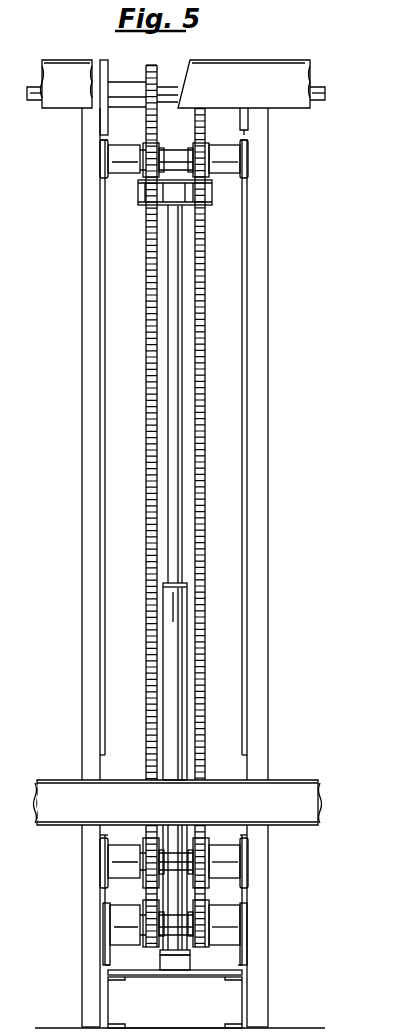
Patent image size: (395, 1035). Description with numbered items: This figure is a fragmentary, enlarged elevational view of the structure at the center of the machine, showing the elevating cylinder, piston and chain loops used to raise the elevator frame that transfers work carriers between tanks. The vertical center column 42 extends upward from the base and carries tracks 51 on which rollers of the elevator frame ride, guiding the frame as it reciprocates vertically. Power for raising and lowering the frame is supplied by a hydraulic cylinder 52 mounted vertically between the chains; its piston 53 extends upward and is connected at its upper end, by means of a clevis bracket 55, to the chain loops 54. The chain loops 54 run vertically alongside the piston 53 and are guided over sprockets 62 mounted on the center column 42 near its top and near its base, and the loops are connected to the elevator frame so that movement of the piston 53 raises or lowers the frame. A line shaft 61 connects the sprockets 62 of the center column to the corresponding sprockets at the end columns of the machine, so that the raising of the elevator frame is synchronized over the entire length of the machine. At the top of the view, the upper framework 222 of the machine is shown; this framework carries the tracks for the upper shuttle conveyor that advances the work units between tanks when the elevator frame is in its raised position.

The vertical center column 42 is at (263, 537).
The tracks 51 is at (244, 470).
The hydraulic cylinder 52 is at (180, 656).
The piston 53 is at (180, 338).
The chain loops 54 is at (203, 275).
The clevis bracket 55 is at (205, 195).
The line shaft 61 is at (163, 82).
The sprockets 62 is at (148, 68).
The upper framework 222 is at (296, 68).